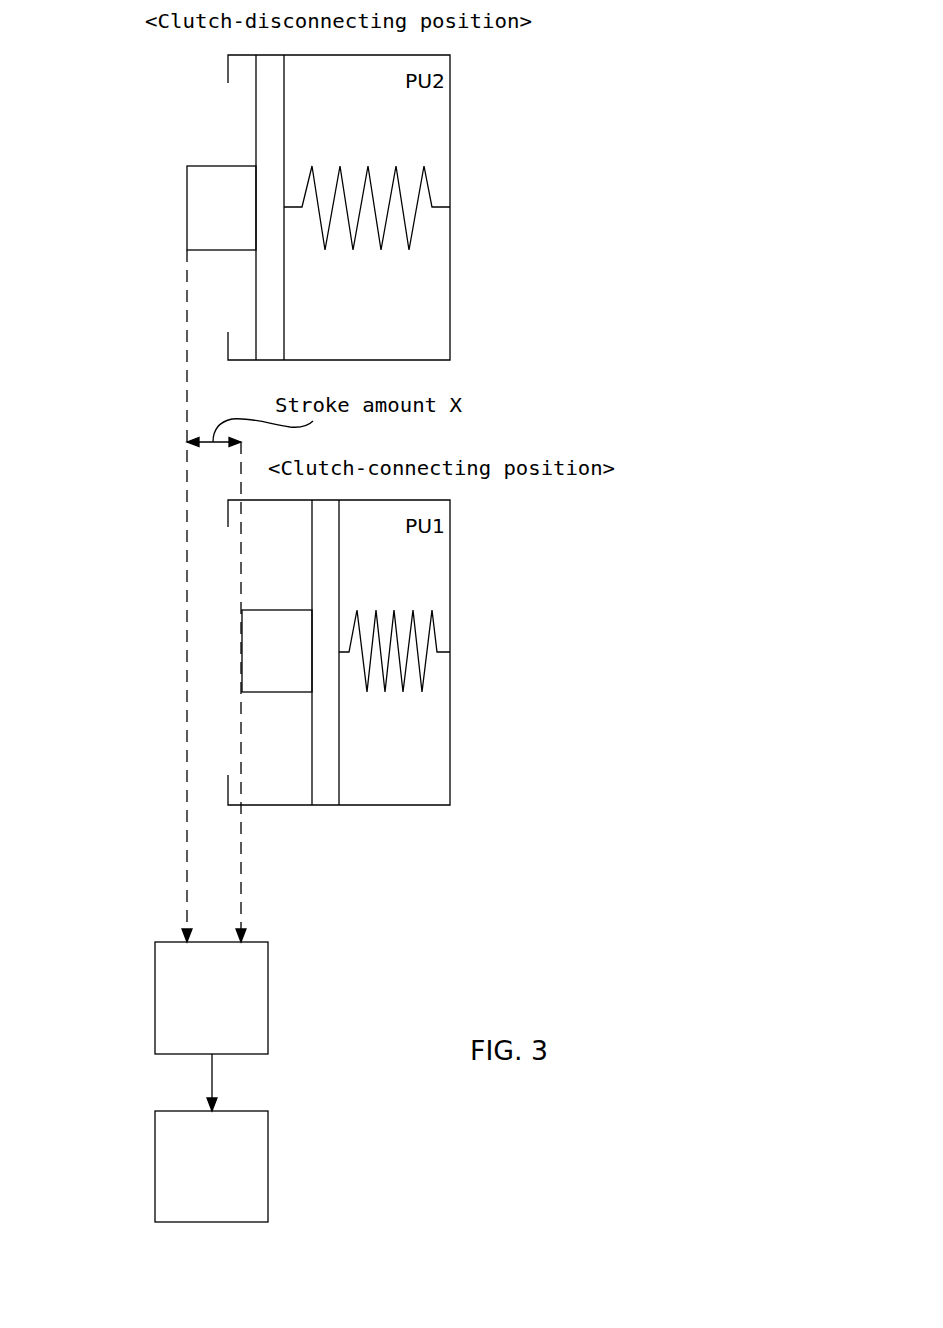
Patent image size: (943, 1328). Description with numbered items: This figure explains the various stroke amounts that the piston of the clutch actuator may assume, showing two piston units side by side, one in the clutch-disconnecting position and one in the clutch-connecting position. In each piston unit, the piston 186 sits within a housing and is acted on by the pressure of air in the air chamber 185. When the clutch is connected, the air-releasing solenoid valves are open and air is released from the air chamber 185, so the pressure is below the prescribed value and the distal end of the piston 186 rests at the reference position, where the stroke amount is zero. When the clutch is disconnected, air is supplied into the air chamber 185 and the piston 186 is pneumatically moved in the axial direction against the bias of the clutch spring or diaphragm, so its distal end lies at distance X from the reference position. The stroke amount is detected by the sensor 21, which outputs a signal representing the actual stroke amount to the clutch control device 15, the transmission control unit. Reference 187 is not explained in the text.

The air chamber 185 is at (426, 334).
The piston 186 is at (409, 250).
The piston 187 is at (187, 208).
The sensor 21 is at (211, 998).
The clutch control device 15 is at (211, 1166).